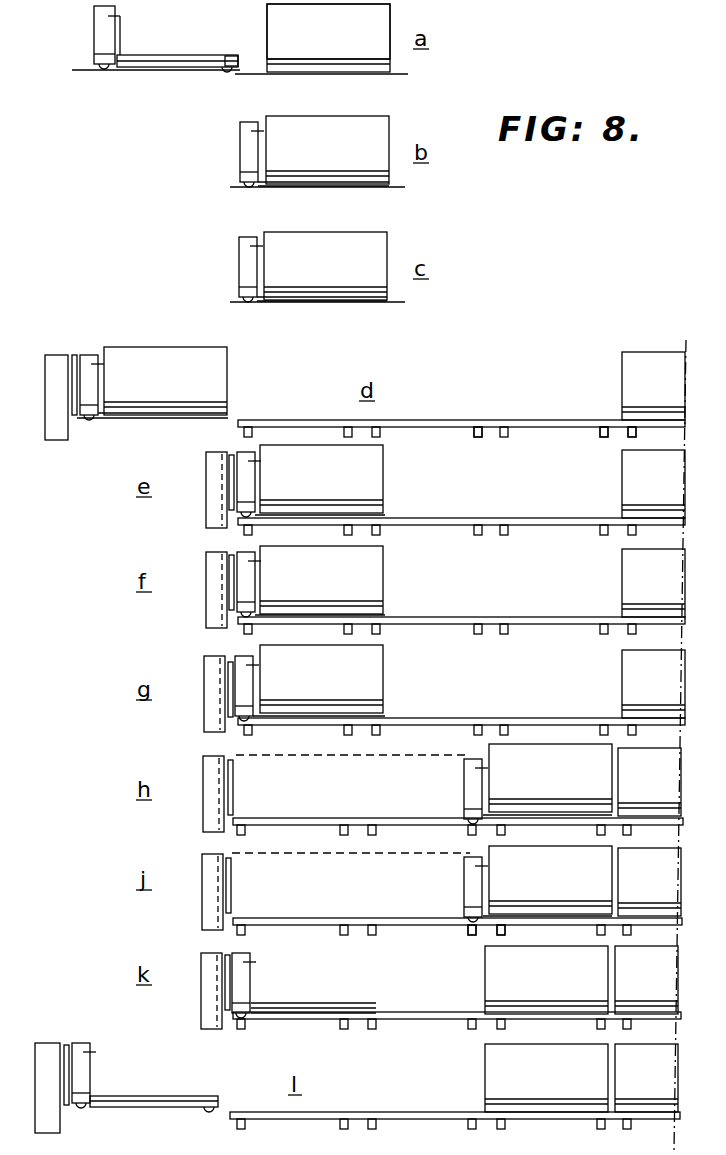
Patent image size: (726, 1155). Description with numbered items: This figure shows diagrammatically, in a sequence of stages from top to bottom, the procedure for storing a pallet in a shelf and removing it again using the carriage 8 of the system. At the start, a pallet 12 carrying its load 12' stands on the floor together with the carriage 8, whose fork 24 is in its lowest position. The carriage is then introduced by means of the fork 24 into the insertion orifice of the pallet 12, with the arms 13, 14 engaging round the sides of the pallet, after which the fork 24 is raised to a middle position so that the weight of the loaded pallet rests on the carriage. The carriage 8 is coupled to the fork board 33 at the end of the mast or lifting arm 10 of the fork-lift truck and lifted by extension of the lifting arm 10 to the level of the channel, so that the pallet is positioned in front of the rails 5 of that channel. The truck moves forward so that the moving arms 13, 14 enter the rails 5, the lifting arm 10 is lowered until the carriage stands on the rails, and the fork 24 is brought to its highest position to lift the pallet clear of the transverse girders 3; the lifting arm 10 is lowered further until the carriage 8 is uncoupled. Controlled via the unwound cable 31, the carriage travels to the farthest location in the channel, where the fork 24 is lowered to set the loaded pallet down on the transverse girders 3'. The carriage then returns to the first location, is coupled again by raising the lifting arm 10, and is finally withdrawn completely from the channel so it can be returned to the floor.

The transverse girders 3 is at (457, 753).
The transverse girders 3' is at (477, 949).
The rails 5 is at (437, 427).
The carriage 8 is at (90, 34).
The lifting arm 10 is at (54, 355).
The pallet 12 is at (394, 558).
The load 12' is at (328, 31).
The arm 13 is at (177, 36).
The arm 14 is at (145, 55).
The fork 24 is at (200, 58).
The cable 31 is at (345, 756).
The fork board 33 is at (75, 355).